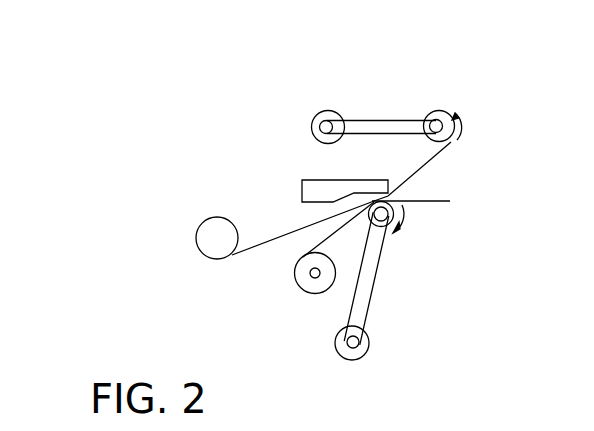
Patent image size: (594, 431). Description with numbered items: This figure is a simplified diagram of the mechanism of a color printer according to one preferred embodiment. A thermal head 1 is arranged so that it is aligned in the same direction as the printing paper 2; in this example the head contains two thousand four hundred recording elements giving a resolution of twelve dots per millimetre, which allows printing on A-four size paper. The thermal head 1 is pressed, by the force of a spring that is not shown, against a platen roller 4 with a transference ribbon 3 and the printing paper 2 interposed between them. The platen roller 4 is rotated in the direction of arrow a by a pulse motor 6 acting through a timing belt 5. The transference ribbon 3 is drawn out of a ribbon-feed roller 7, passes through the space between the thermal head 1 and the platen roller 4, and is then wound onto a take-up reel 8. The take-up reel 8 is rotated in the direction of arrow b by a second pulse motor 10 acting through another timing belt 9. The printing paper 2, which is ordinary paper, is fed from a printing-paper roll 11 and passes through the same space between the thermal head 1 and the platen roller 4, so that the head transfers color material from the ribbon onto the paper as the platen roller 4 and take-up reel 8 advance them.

The thermal head 1 is at (302, 192).
The printing paper 2 is at (443, 201).
The transference ribbon 3 is at (413, 181).
The platen roller 4 is at (402, 210).
The timing belt 5 is at (370, 295).
The pulse motor 6 is at (337, 356).
The ribbon-feed roller 7 is at (199, 228).
The take-up reel 8 is at (447, 112).
The timing belt 9 is at (377, 121).
The pulse motor 10 is at (314, 114).
The printing-paper roll 11 is at (302, 290).
The arrow a is at (404, 236).
The arrow b is at (460, 127).